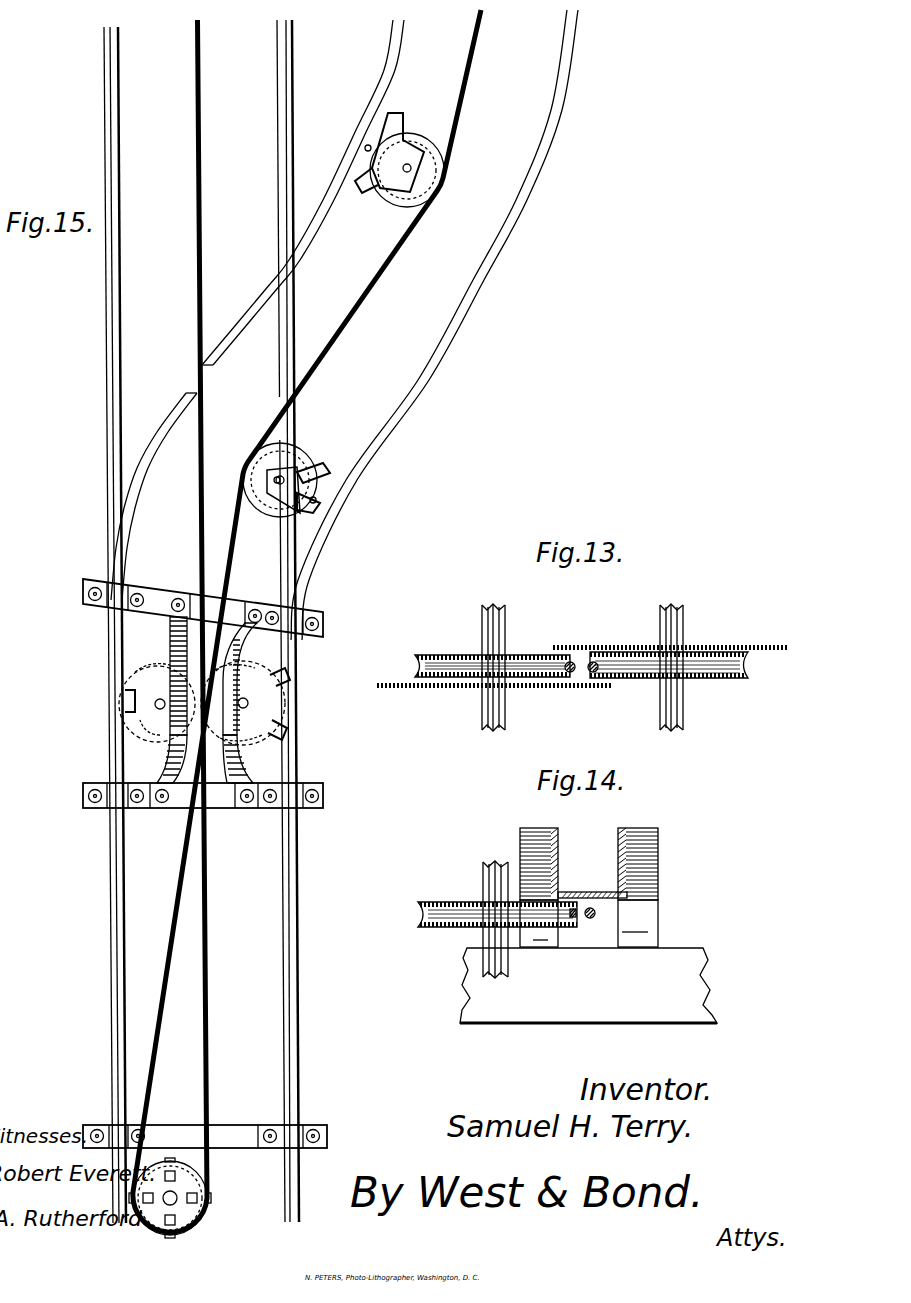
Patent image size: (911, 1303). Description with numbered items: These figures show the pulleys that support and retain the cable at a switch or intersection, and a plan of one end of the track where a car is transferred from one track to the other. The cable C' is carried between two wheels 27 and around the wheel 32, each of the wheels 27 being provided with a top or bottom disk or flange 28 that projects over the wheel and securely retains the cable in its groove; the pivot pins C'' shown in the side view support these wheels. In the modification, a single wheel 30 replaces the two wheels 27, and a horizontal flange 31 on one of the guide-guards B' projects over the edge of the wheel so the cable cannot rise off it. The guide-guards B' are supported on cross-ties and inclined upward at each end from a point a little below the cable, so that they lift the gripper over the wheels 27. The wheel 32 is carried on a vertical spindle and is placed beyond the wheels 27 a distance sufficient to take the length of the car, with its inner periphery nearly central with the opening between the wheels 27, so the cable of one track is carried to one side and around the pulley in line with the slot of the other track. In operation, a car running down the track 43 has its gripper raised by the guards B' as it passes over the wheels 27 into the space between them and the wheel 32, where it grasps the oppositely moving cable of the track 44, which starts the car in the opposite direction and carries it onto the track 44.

In FIG. 15, the track 43 is at (126, 625).
In FIG. 15, the track 44 is at (434, 325).
In FIG. 15, the wheels 27 is at (252, 680).
In FIG. 13, the wheels 27 is at (762, 669).
In FIG. 15, the top and bottom disk or flange 28 is at (207, 759).
In FIG. 13, the top and bottom disk or flange 28 is at (400, 689).
In FIG. 15, the guide-guards B' is at (228, 697).
In FIG. 14, the guide-guards B' is at (592, 851).
In FIG. 15, the wheel 32 is at (203, 1212).
In FIG. 13, the pivot pin C'' is at (589, 665).
In FIG. 14, the pivot pin C'' is at (601, 915).
In FIG. 14, the cable C' is at (583, 925).
In FIG. 14, the single wheel 30 is at (420, 915).
In FIG. 14, the horizontal flange 31 is at (592, 885).